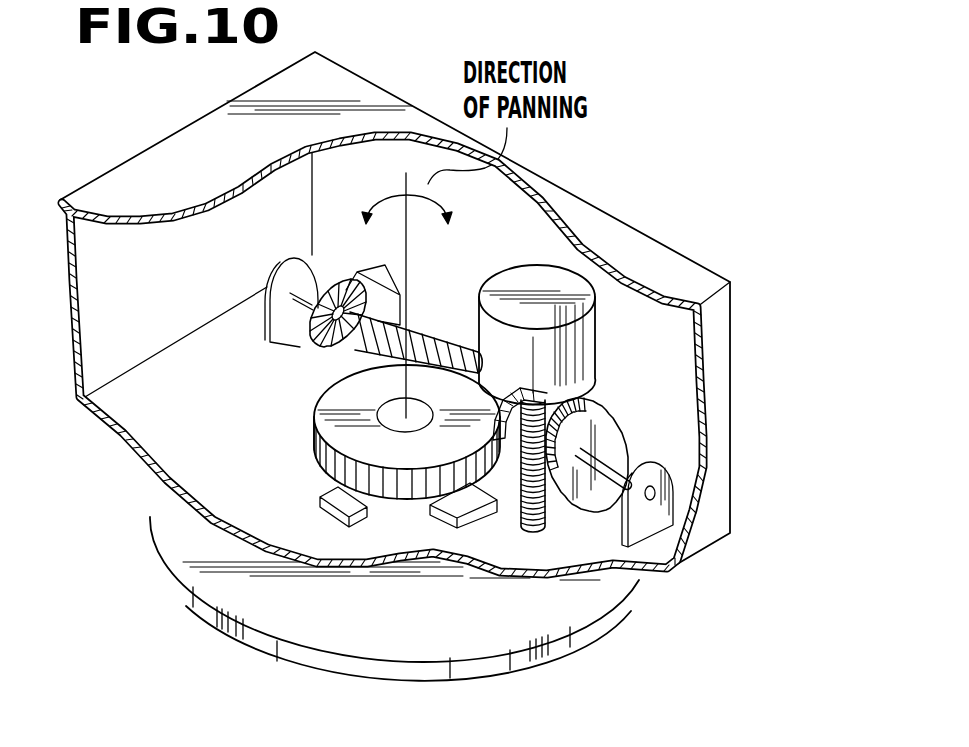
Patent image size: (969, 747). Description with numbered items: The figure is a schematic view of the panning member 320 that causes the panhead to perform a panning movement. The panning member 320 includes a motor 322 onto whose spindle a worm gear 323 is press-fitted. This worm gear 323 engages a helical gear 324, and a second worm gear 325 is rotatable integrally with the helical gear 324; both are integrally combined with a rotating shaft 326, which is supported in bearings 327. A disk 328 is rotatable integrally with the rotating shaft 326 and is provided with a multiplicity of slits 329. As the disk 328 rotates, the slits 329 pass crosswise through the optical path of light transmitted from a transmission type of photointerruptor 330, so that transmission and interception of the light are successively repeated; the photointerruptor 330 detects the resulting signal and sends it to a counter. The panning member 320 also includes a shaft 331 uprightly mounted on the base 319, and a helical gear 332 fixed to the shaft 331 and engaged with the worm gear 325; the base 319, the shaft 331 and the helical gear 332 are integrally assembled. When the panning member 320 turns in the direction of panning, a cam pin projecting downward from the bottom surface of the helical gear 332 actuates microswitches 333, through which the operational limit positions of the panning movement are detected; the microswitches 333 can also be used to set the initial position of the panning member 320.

The base 319 is at (290, 612).
The panning member 320 is at (646, 227).
The motor 322 is at (533, 282).
The worm gear 323 is at (530, 532).
The helical gear 324 is at (605, 420).
The worm gear 325 is at (357, 363).
The rotating shaft 326 is at (620, 455).
The bearings 327 is at (288, 258).
The disk 328 is at (344, 270).
The slits 329 is at (300, 357).
The photointerruptor 330 is at (372, 283).
The shaft 331 is at (315, 428).
The helical gear 332 is at (340, 470).
The microswitches 333 is at (443, 502).